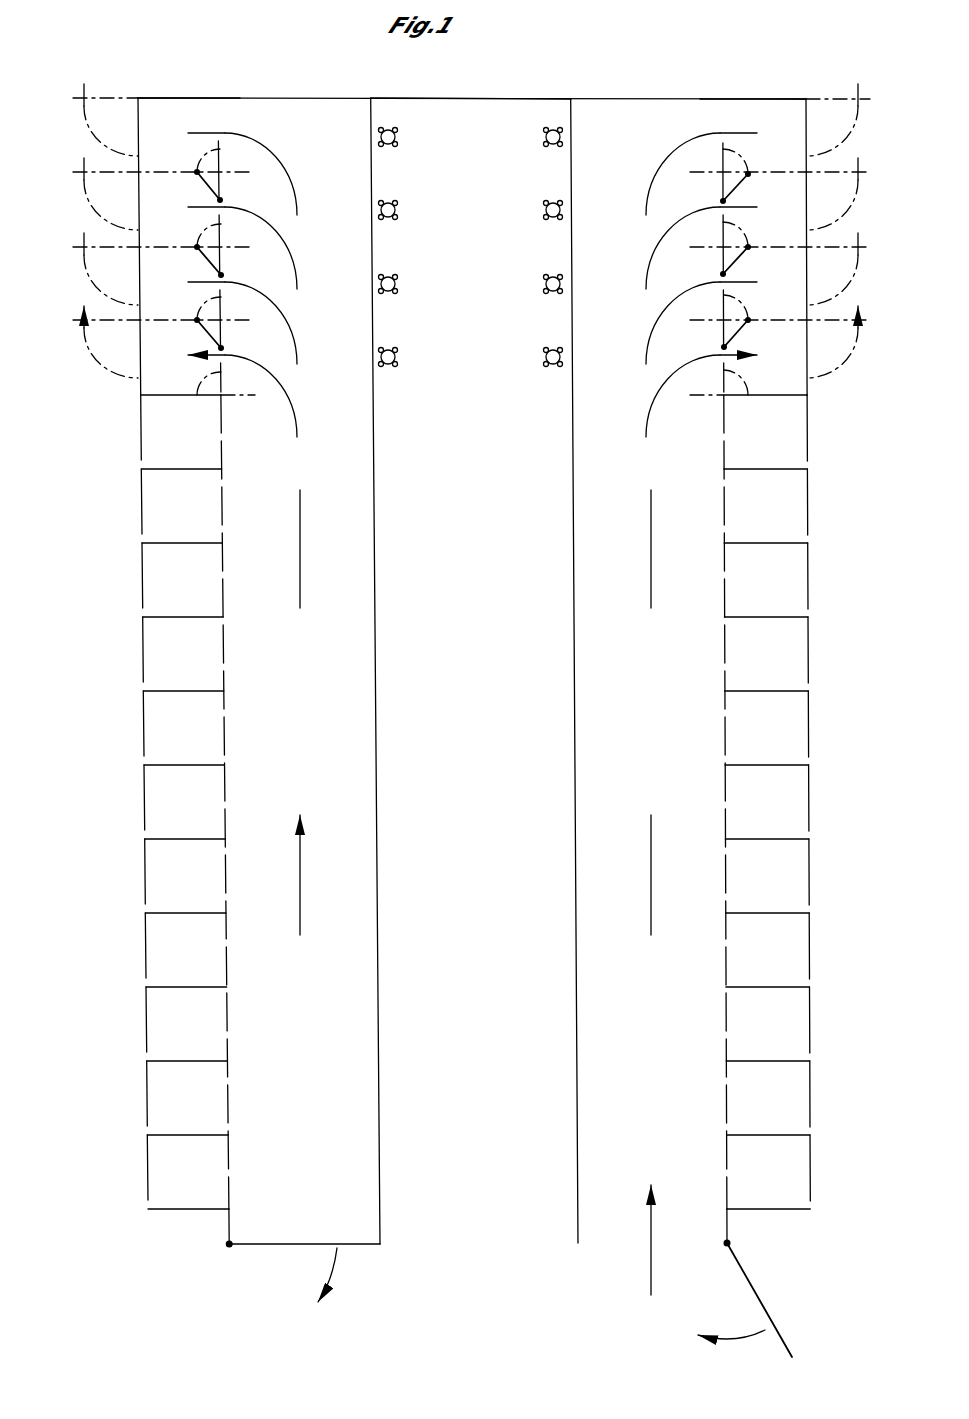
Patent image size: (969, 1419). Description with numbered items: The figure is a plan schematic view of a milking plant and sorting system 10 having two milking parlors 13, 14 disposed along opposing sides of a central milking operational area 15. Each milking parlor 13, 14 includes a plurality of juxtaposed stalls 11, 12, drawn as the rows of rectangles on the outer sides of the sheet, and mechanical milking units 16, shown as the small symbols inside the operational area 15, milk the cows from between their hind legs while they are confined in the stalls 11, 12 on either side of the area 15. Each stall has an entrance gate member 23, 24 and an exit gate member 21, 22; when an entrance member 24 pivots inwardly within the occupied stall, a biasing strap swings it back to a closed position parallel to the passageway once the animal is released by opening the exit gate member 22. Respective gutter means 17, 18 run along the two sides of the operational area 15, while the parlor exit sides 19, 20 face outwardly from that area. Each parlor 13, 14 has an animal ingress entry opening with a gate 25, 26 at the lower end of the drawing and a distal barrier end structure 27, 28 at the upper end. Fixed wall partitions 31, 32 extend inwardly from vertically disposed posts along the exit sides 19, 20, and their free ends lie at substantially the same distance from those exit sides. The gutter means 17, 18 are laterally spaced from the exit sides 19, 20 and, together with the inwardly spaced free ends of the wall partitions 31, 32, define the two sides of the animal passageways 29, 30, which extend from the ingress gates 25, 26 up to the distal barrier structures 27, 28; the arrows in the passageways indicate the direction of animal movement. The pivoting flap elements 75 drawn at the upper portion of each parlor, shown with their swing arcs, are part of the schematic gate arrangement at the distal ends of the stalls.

The milking plant and sorting system 10 is at (115, 798).
The stalls 11 is at (205, 538).
The stalls 12 is at (745, 538).
The milking parlor 13 is at (183, 96).
The milking parlor 14 is at (703, 96).
The milking operational area 15 is at (465, 113).
The mechanical milking units 16 is at (545, 143).
The gutter means 17 is at (371, 253).
The gutter means 18 is at (577, 265).
The parlor exit side 19 is at (138, 648).
The parlor exit side 20 is at (820, 605).
The exit gate member 21 is at (140, 430).
The exit gate member 22 is at (808, 430).
The entrance gate member 23 is at (223, 413).
The entrance gate member 24 is at (722, 455).
The gate 25 is at (291, 1246).
The gate 26 is at (758, 1295).
The distal barrier end structure 27 is at (243, 97).
The distal barrier end structure 28 is at (622, 97).
The animal passageway 29 is at (316, 753).
The animal passageway 30 is at (666, 753).
The wall partitions 31 is at (178, 617).
The wall partitions 32 is at (760, 692).
The pivoting flap 75 is at (208, 185).